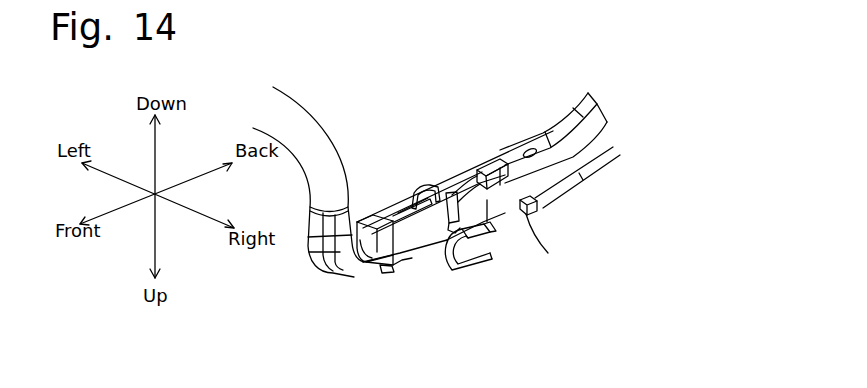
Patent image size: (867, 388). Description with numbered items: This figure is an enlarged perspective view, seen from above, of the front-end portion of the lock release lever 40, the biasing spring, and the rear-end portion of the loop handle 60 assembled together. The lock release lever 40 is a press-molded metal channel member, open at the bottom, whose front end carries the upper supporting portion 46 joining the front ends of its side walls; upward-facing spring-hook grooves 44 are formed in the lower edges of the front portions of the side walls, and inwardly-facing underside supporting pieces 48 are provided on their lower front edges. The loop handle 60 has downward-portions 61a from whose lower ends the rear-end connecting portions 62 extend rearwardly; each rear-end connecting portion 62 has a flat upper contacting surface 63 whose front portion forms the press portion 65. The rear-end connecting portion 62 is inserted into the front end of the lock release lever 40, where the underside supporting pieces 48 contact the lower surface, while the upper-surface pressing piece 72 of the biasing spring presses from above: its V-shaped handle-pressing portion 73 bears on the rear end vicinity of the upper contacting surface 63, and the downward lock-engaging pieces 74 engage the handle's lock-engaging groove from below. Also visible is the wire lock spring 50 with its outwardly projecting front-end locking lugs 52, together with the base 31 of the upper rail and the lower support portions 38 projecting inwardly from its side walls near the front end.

The base 31 is at (480, 256).
The lower support portion 38 is at (465, 265).
The lock release lever 40 is at (566, 118).
The spring-hook groove 44 is at (548, 253).
The upper supporting portion 46 is at (368, 217).
The underside supporting piece 48 is at (378, 280).
The lock spring 50 is at (612, 172).
The front-end locking lug 52 is at (530, 208).
The loop handle 60 is at (288, 100).
The downward-portion 61a is at (312, 238).
The rear-end connecting portion 62 is at (411, 225).
The upper contacting surface 63 is at (398, 216).
The press portion 65 is at (362, 257).
The upper-surface pressing piece 72 is at (472, 176).
The handle-pressing portion 73 is at (420, 200).
The downward lock-engaging piece 74 is at (448, 235).